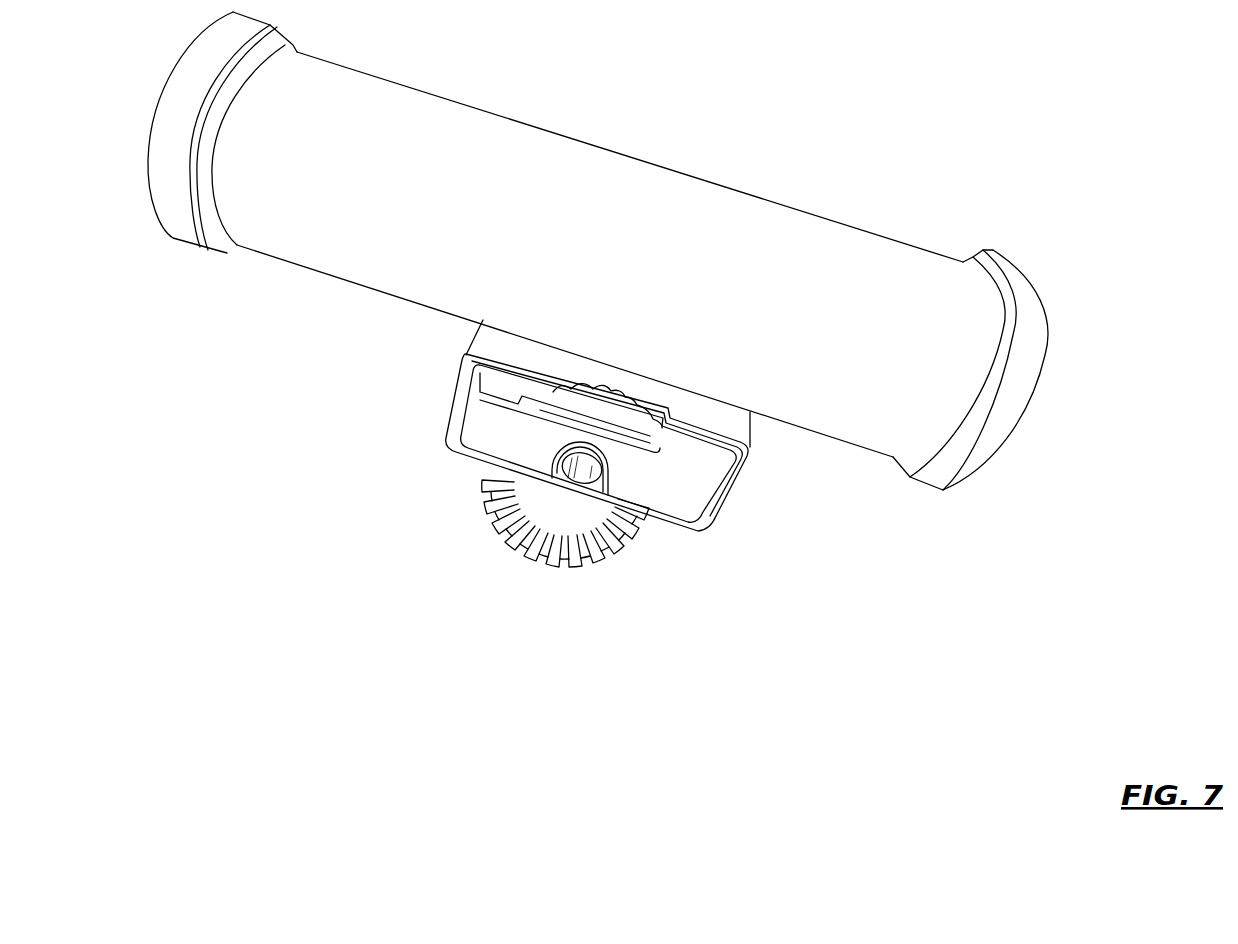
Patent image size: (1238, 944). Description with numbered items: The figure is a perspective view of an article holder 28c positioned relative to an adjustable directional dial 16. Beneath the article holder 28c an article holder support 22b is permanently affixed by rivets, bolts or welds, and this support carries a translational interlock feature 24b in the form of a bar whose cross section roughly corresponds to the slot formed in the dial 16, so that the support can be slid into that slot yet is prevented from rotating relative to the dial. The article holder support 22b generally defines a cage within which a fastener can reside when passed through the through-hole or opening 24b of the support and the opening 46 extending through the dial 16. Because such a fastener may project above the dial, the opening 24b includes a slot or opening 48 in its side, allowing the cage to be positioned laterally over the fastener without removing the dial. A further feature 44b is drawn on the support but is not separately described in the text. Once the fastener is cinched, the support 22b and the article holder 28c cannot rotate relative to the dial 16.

The article holder 28c is at (828, 412).
The article holder support 22b is at (723, 497).
The support translational interlock feature 24b is at (680, 522).
The slot plate 44b is at (660, 453).
The opening 46 is at (580, 455).
The slot or opening 48 is at (583, 497).
The directional dial 16 is at (543, 502).